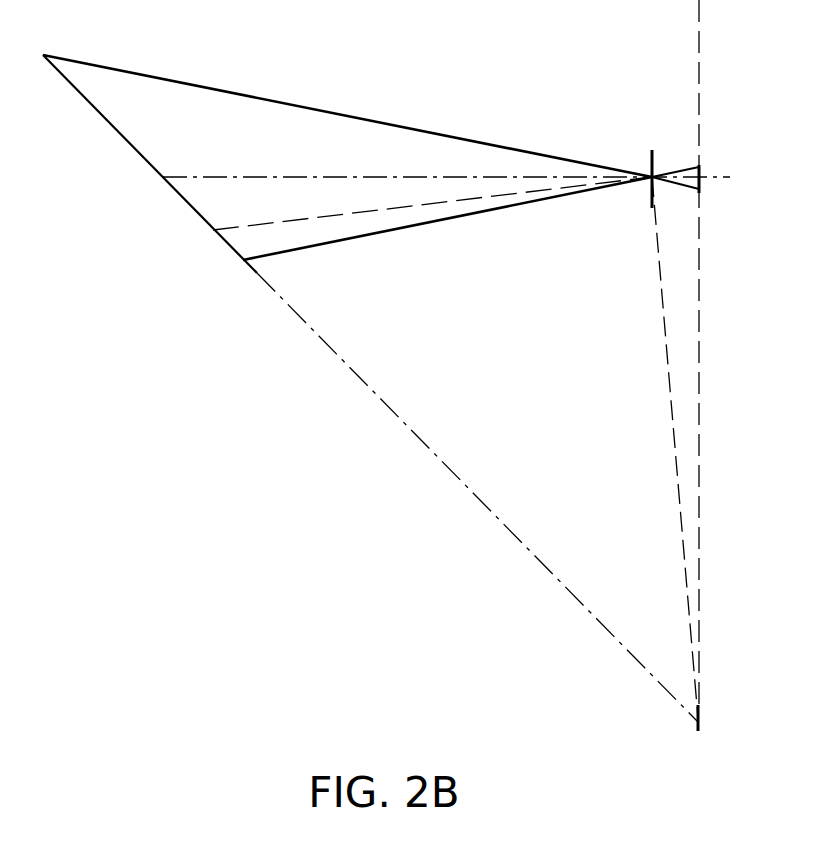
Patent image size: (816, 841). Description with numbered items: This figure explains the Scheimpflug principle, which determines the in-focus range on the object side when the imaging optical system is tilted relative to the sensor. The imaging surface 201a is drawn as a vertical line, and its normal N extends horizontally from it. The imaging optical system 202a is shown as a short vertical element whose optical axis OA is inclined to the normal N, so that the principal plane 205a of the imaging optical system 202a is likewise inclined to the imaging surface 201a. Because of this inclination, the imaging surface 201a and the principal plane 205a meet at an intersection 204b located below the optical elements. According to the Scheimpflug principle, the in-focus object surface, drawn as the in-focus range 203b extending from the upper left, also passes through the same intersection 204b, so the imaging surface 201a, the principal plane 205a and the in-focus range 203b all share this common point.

The imaging surface 201a is at (700, 163).
The imaging optical system 202a is at (652, 175).
The in-focus range 203b is at (143, 157).
The intersection 204b is at (697, 727).
The principal plane 205a is at (650, 197).
The normal N is at (367, 177).
The optical axis OA is at (350, 213).